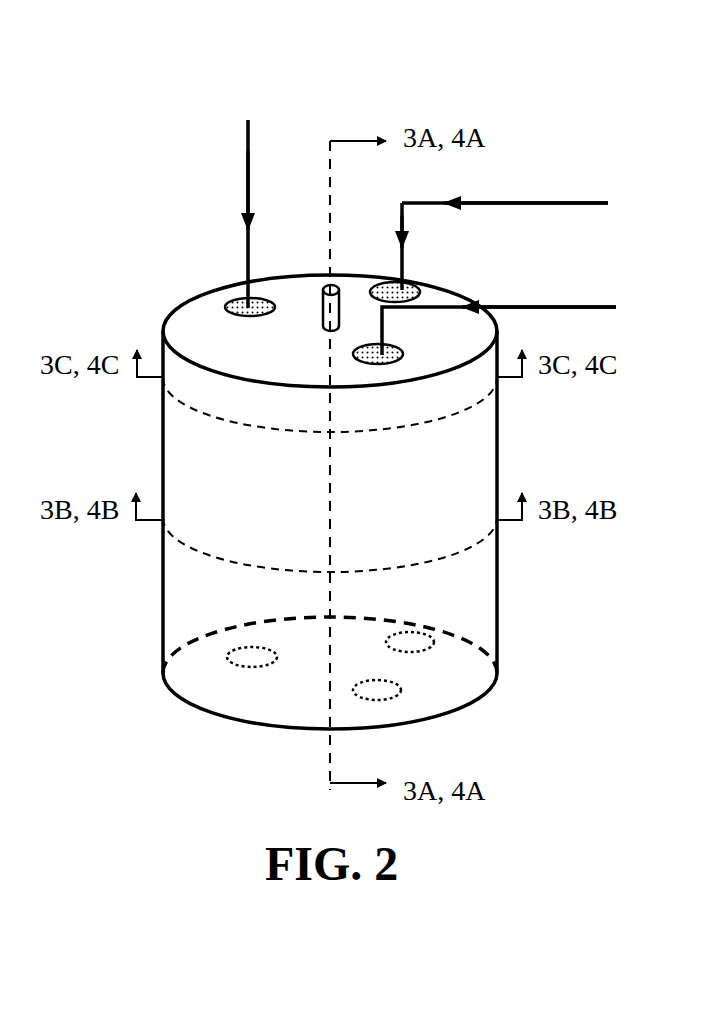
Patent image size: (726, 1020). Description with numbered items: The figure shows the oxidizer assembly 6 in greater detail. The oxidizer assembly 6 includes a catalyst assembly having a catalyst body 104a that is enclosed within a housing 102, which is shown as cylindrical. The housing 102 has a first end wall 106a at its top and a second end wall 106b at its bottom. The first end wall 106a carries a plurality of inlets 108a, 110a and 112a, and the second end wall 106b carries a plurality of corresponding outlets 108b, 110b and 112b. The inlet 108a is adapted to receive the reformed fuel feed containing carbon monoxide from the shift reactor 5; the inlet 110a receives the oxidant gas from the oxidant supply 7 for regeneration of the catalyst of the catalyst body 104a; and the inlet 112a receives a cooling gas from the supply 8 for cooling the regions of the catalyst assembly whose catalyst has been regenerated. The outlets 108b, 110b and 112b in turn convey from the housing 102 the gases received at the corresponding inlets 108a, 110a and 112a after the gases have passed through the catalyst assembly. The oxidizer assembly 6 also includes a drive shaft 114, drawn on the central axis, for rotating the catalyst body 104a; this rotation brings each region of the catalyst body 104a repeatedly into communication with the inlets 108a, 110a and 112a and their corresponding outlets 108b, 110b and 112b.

The oxidizer assembly 6 is at (560, 444).
The housing 102 is at (497, 587).
The catalyst body 104a is at (401, 290).
The first end wall 106a is at (171, 314).
The second end wall 106b is at (294, 730).
The inlet 108a is at (390, 358).
The outlet 108b is at (397, 694).
The inlet 110a is at (403, 288).
The outlet 110b is at (405, 646).
The inlet 112a is at (230, 298).
The outlet 112b is at (232, 667).
The drive shaft 114 is at (322, 286).
The supply 8 is at (246, 155).
The oxidant supply 7 is at (520, 204).
The shift reactor 5 is at (503, 317).